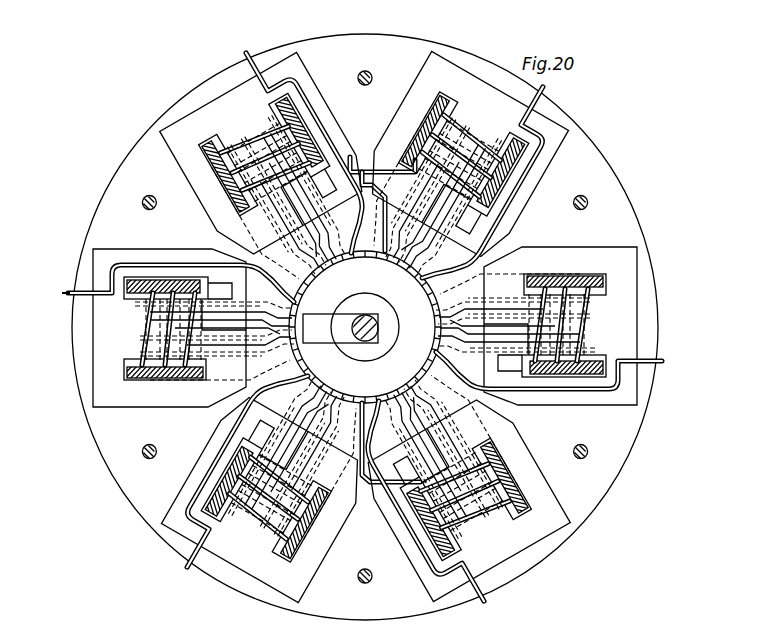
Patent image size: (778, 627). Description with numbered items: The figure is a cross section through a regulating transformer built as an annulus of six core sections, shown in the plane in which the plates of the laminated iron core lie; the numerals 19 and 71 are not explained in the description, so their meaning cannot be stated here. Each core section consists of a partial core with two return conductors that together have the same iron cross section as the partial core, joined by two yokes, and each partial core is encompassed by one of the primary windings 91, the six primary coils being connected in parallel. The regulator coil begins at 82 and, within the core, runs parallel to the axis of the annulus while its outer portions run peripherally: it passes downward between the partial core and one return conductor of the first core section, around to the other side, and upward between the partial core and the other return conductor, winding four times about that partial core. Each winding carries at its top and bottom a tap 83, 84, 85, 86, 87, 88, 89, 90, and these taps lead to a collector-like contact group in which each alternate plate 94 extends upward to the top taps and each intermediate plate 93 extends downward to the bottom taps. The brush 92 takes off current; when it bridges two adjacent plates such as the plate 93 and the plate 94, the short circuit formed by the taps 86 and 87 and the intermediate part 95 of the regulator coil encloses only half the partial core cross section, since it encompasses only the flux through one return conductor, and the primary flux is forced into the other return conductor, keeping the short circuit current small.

The housing disc 19 is at (103, 330).
The brush holder bar 71 is at (152, 293).
The beginning of regulator coil 82 is at (68, 293).
The tap 83 is at (173, 263).
The tap 84 is at (218, 303).
The tap 85 is at (227, 313).
The tap 86 is at (253, 315).
The tap 87 is at (222, 350).
The tap 88 is at (248, 350).
The tap 89 is at (305, 360).
The tap 90 is at (310, 373).
The primary windings 91 is at (168, 379).
The brush 92 is at (294, 326).
The intermediate plate 93 is at (293, 318).
The alternate plate 94 is at (298, 344).
The intermediate part of regulator coil 95 is at (173, 366).